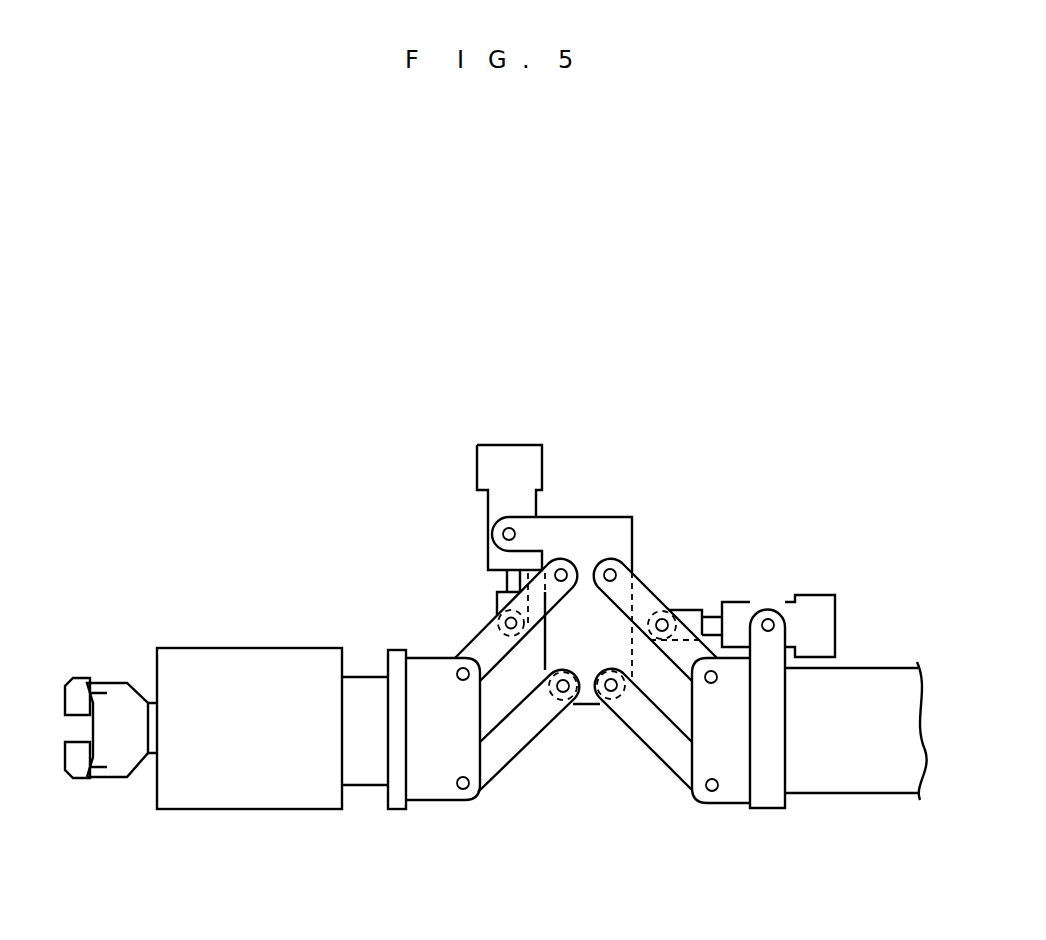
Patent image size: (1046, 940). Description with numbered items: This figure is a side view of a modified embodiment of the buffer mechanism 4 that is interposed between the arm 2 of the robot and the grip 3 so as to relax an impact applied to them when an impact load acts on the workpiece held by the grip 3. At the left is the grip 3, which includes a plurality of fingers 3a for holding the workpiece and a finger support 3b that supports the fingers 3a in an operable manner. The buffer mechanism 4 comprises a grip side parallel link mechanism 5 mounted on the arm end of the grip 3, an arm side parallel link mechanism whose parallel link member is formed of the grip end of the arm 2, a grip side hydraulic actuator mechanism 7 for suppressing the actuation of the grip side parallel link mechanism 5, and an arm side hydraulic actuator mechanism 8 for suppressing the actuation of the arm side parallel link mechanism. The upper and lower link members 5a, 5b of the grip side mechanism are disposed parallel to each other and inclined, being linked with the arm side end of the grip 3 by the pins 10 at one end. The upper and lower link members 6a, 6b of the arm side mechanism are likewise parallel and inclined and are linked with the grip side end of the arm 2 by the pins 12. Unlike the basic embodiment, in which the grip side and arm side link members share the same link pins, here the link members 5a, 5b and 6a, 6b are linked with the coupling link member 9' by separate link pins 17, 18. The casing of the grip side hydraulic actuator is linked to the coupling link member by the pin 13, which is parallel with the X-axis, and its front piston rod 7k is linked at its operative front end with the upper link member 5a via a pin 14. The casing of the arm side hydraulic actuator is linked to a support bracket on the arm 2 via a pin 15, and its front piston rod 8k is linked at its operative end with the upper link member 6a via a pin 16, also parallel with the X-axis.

The arm 2 is at (858, 688).
The grip 3 is at (268, 598).
The fingers 3a is at (102, 687).
The finger support 3b is at (243, 670).
The buffer mechanism 4 is at (745, 878).
The grip side parallel link mechanism 5 is at (462, 656).
The upper link member 5a is at (477, 640).
The lower link member 5b is at (535, 731).
The upper link member 6a is at (640, 586).
The lower link member 6b is at (642, 718).
The grip side hydraulic actuator mechanism 7 is at (497, 502).
The front piston rod 7k is at (507, 582).
The arm side hydraulic actuator mechanism 8 is at (797, 615).
The front piston rod 8k is at (708, 617).
The coupling link member 9' is at (584, 572).
The pins 10 is at (462, 679).
The pins 12 is at (712, 684).
The pin 13 is at (509, 528).
The pin 14 is at (509, 618).
The pin 15 is at (768, 618).
The pin 16 is at (663, 619).
The link pin 17 is at (561, 568).
The link pin 18 is at (608, 568).